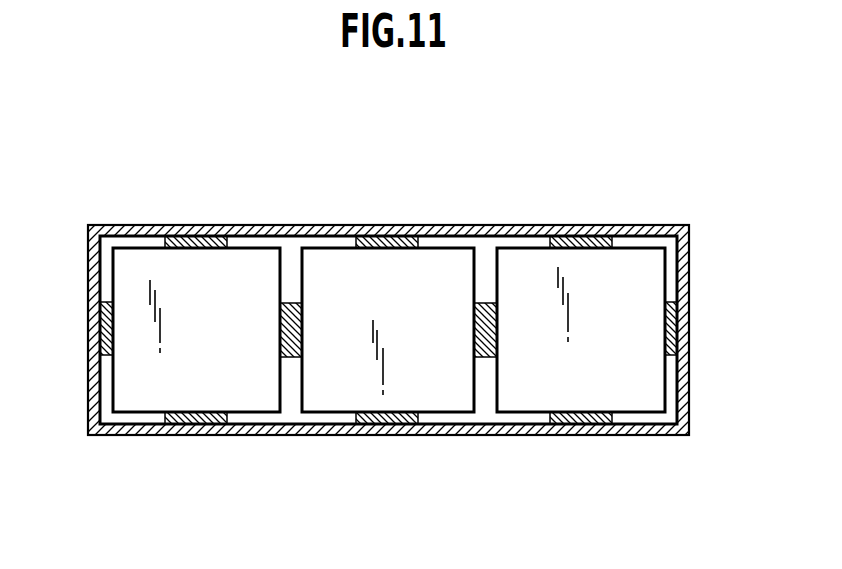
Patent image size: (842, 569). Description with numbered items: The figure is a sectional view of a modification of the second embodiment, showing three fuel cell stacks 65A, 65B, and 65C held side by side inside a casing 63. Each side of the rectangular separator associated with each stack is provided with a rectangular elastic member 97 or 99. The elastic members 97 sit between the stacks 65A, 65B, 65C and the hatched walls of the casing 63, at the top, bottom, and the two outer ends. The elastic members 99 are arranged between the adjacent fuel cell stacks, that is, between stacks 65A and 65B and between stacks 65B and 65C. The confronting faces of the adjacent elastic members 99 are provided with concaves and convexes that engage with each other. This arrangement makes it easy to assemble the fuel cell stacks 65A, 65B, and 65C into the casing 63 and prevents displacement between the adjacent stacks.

The casing 63 is at (322, 234).
The fuel cell stack 65A is at (233, 290).
The fuel cell stack 65B is at (423, 290).
The fuel cell stack 65C is at (622, 290).
The elastic member 97 is at (193, 236).
The elastic member 99 is at (285, 358).